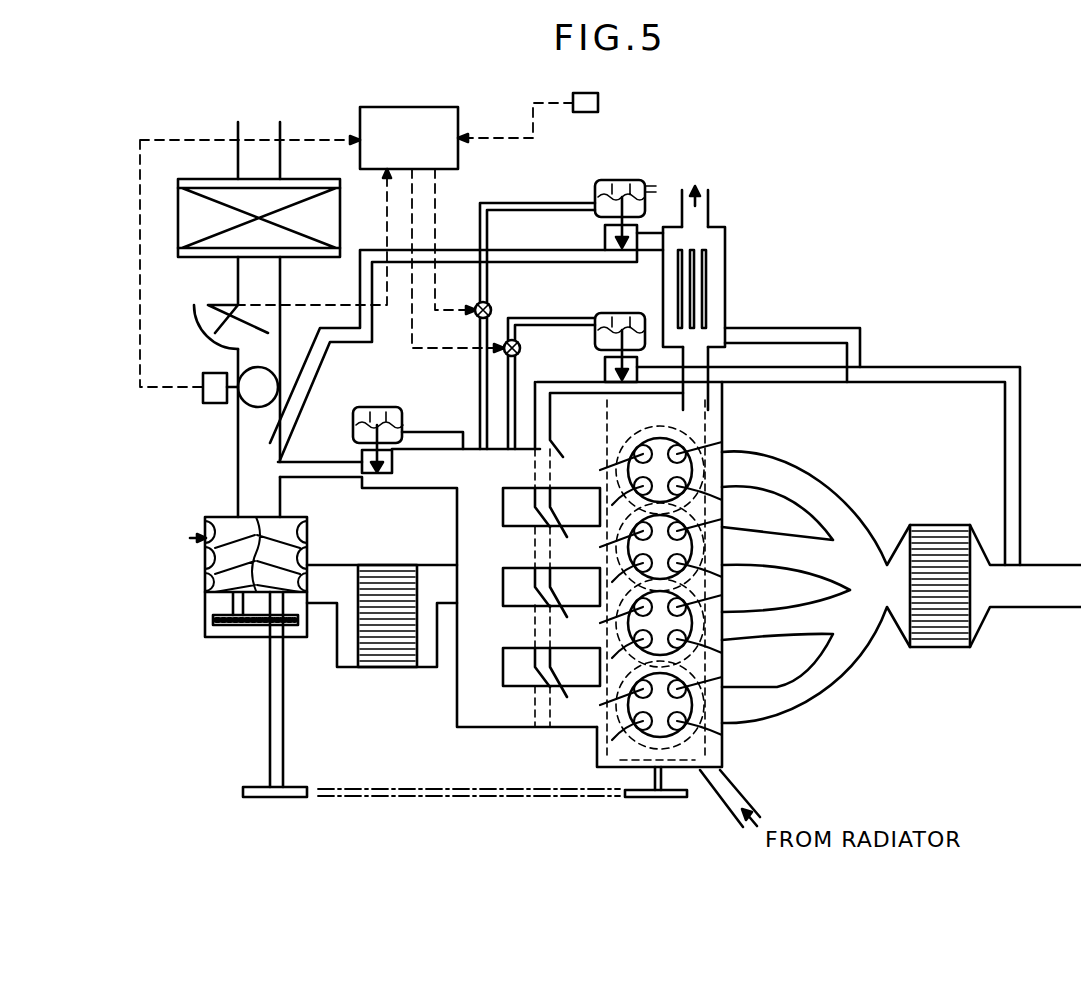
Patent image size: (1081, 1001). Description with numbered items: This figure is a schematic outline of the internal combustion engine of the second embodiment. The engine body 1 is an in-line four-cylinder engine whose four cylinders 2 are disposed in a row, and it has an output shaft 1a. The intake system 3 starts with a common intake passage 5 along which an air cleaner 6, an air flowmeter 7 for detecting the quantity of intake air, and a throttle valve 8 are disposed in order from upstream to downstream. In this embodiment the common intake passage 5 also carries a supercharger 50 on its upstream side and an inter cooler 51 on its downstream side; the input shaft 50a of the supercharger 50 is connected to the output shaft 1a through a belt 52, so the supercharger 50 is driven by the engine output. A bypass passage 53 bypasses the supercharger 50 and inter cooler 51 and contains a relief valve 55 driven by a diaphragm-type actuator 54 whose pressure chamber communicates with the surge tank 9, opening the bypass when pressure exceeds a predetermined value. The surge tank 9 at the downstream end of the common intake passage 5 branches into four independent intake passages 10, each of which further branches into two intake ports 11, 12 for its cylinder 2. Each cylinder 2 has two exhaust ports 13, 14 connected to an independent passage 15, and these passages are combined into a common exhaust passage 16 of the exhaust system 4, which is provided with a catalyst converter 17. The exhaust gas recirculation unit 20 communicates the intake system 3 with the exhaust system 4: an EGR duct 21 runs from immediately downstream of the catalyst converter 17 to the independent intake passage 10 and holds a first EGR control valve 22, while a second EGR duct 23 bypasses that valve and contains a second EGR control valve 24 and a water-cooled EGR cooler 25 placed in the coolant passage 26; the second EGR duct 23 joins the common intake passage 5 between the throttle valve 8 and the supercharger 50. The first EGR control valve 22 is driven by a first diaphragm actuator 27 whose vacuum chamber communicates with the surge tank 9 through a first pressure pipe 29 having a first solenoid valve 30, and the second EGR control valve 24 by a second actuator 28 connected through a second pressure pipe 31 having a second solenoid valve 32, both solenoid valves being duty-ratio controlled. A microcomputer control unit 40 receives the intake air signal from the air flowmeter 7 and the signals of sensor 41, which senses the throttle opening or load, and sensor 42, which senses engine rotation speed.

The engine body 1 is at (697, 776).
The output shaft 1a is at (655, 782).
The cylinder 2 is at (708, 428).
The intake system 3 is at (426, 680).
The exhaust system 4 is at (832, 716).
The common intake passage 5 is at (248, 470).
The air cleaner 6 is at (192, 258).
The air flowmeter 7 is at (198, 320).
The throttle valve 8 is at (262, 380).
The surge tank 9 is at (458, 612).
The independent intake passage 10 is at (492, 486).
The intake port 11 is at (602, 434).
The intake port 12 is at (622, 462).
The exhaust port 13 is at (716, 440).
The exhaust port 14 is at (730, 455).
The independent intake passage 15 is at (765, 489).
The common exhaust passage 16 is at (1035, 599).
The catalyst converter 17 is at (949, 648).
The exhaust gas recirculation unit 20 is at (832, 312).
The EGR duct 21 is at (829, 375).
The first EGR control valve 22 is at (604, 378).
The second EGR duct 23 is at (786, 334).
The second EGR control valve 24 is at (602, 244).
The EGR cooler 25 is at (727, 272).
The coolant passage 26 is at (710, 215).
The first actuator 27 is at (642, 313).
The second actuator 28 is at (600, 181).
The first pressure pipe 29 is at (580, 318).
The first solenoid valve 30 is at (520, 348).
The second pressure pipe 31 is at (530, 203).
The second solenoid valve 32 is at (491, 308).
The control unit 40 is at (460, 118).
The sensor 41 is at (206, 401).
The sensor 42 is at (598, 103).
The supercharger 50 is at (196, 540).
The input shaft 50a is at (268, 736).
The inter cooler 51 is at (401, 565).
The belt 52 is at (447, 798).
The bypass passage 53 is at (334, 478).
The actuator 54 is at (402, 408).
The relief valve 55 is at (394, 471).